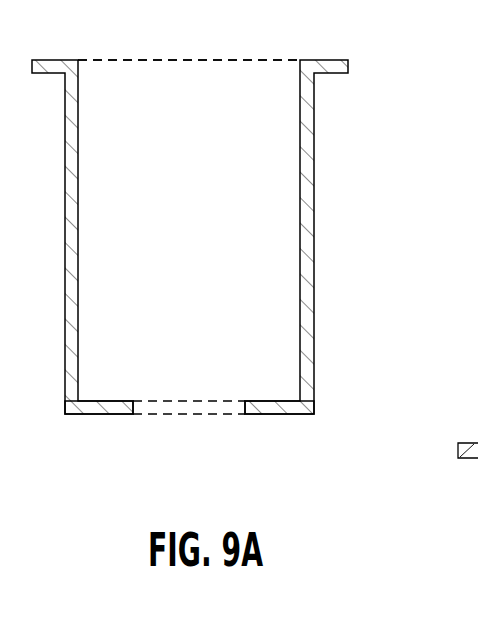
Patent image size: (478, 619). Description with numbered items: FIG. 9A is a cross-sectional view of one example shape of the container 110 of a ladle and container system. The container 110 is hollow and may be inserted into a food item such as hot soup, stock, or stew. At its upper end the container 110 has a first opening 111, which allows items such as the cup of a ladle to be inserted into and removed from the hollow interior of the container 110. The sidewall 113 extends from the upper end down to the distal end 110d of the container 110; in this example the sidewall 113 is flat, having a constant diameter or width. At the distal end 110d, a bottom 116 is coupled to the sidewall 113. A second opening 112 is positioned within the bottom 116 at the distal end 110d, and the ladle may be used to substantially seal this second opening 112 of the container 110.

The container 110 is at (226, 243).
The first opening 111 is at (233, 60).
The second opening 112 is at (193, 413).
The sidewall 113 is at (315, 288).
The bottom 116 is at (102, 415).
The distal end 110d is at (316, 401).